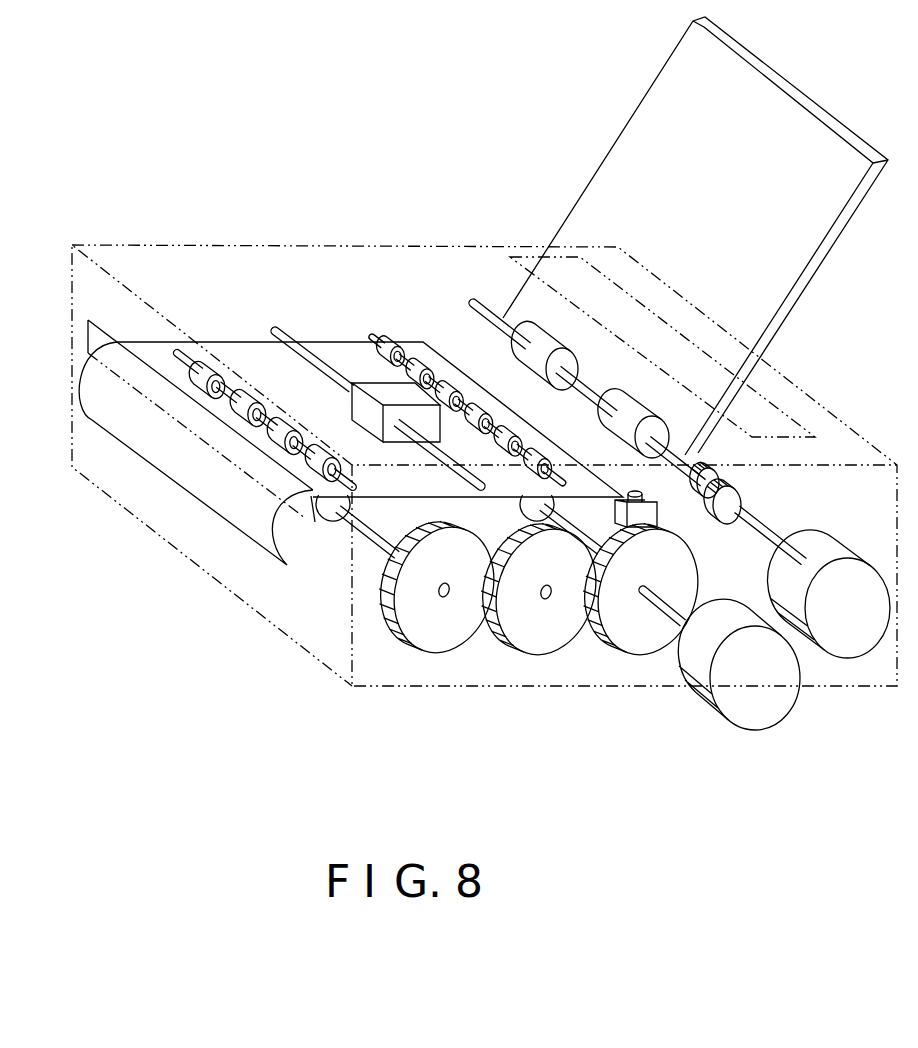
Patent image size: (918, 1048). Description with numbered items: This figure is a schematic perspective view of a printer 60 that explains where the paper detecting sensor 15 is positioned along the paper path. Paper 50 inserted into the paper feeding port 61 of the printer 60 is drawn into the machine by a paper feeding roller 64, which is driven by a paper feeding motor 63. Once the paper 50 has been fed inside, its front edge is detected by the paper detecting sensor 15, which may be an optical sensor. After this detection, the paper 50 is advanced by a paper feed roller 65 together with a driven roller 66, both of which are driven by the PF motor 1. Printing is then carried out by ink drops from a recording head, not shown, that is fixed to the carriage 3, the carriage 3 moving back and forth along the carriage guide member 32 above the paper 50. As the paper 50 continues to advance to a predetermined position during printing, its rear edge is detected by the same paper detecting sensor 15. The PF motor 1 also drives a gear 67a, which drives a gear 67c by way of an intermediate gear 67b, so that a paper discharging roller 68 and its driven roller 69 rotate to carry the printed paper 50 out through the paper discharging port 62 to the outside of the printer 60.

The PF motor 1 is at (757, 717).
The carriage 3 is at (385, 385).
The paper detecting sensor 15 is at (653, 521).
The carriage guide member 32 is at (284, 338).
The paper 50 is at (800, 88).
The printer 60 is at (297, 243).
The paper feeding port 61 is at (800, 427).
The paper discharging port 62 is at (98, 322).
The paper feeding motor 63 is at (847, 643).
The paper feeding roller 64 is at (533, 330).
The paper feed roller 65 is at (545, 497).
The driven roller 66 is at (400, 343).
The gear 67a is at (627, 647).
The gear 67b is at (527, 643).
The gear 67c is at (423, 643).
The paper discharging roller 68 is at (330, 522).
The driven roller 69 is at (208, 370).